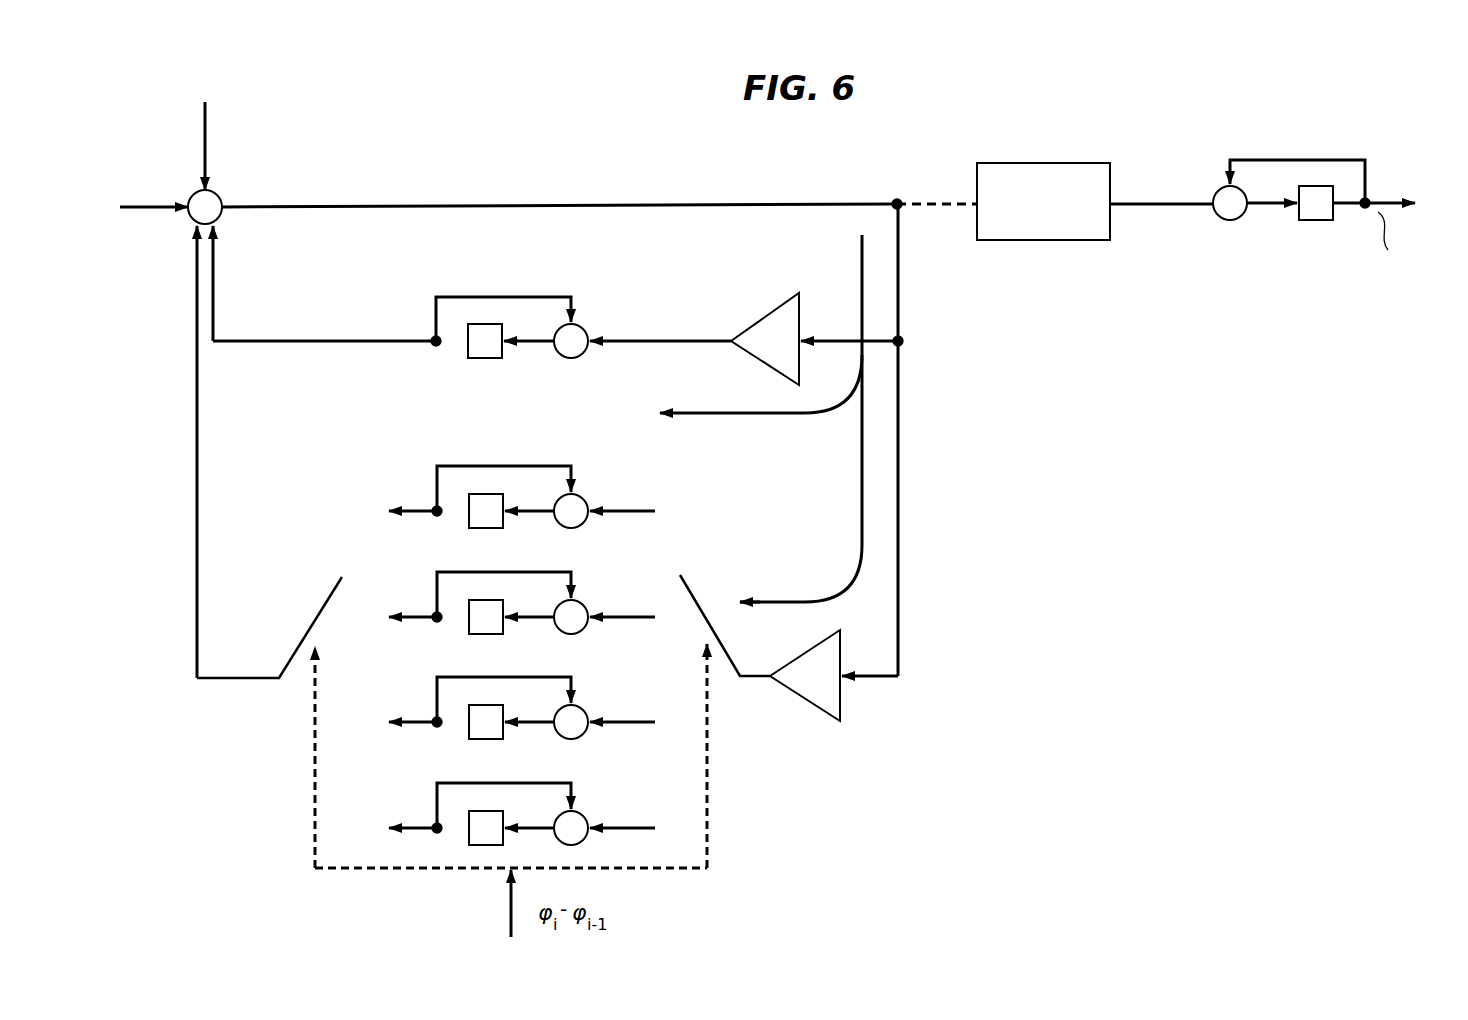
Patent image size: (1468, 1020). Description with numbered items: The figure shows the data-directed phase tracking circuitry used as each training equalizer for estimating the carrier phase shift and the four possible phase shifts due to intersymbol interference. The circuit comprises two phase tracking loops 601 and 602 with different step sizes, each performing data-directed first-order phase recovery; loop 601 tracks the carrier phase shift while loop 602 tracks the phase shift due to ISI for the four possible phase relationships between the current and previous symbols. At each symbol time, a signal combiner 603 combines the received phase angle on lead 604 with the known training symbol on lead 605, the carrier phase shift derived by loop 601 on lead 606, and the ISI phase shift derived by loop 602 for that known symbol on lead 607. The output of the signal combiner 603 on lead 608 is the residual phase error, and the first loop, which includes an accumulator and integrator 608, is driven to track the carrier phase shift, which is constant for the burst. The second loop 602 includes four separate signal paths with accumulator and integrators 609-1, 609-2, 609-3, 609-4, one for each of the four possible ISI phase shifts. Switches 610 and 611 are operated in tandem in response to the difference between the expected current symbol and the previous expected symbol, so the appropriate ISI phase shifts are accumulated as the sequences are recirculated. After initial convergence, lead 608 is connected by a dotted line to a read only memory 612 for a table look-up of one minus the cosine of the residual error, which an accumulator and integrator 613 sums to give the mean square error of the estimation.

The phase tracking loop 601 is at (818, 450).
The phase tracking loop 602 is at (818, 575).
The signal combiner 603 is at (222, 198).
The lead 604 is at (148, 217).
The lead 605 is at (206, 128).
The lead 606 is at (322, 340).
The lead 607 is at (200, 466).
The lead / accumulator and integrator 608 is at (350, 206).
The accumulator and integrator 609-1 is at (642, 459).
The accumulator and integrator 609-2 is at (642, 565).
The accumulator and integrator 609-3 is at (642, 670).
The accumulator and integrator 609-4 is at (642, 776).
The switch 610 is at (706, 612).
The switch 611 is at (312, 620).
The read only memory (ROM) 612 is at (1034, 241).
The accumulator and integrator 613 is at (1314, 126).